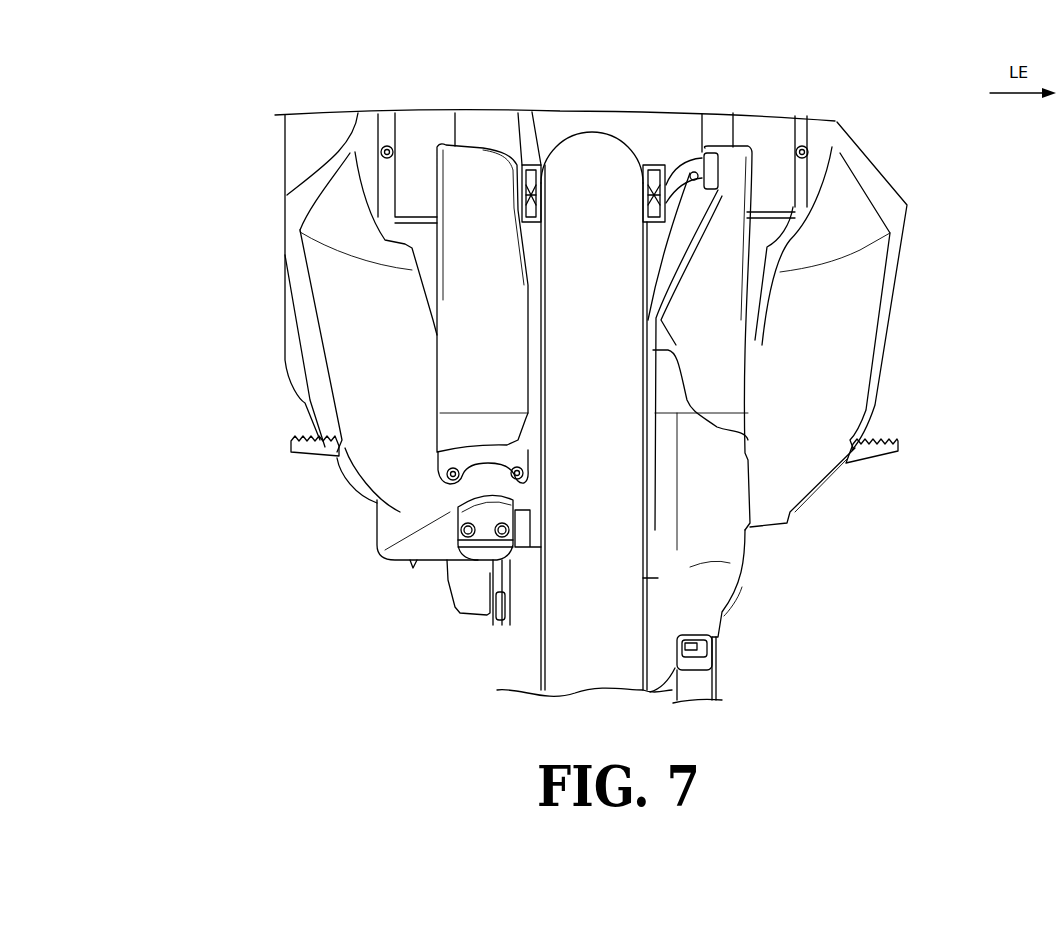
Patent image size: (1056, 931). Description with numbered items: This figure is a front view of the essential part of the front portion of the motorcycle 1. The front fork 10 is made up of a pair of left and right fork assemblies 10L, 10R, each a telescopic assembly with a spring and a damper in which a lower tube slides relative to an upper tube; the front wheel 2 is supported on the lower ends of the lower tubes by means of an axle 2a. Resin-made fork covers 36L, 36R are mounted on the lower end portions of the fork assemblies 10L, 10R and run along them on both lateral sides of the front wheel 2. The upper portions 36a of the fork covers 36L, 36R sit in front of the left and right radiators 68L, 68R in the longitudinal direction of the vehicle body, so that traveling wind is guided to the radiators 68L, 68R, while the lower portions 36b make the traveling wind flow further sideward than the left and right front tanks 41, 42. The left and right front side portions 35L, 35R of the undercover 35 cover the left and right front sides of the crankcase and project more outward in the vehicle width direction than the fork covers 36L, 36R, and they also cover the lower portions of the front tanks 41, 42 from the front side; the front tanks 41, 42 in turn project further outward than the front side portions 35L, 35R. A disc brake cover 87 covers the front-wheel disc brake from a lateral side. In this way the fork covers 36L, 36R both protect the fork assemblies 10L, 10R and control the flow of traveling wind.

The motorcycle 1 is at (238, 122).
The front wheel 2 is at (604, 680).
The axle 2a is at (528, 538).
The front fork 10 is at (447, 128).
The right fork assembly 10R is at (487, 128).
The left fork assembly 10L is at (718, 128).
The undercover 35 is at (411, 561).
The right front side portion 35R is at (377, 458).
The left front side portion 35L is at (812, 470).
The right fork cover 36R is at (432, 374).
The left fork cover 36L is at (760, 344).
The upper portion 36a is at (490, 178).
The lower portion 36b is at (450, 414).
The left front tank 41 is at (897, 208).
The right front tank 42 is at (304, 205).
The right radiator 68R is at (412, 182).
The left radiator 68L is at (775, 177).
The disc brake cover 87 is at (720, 540).